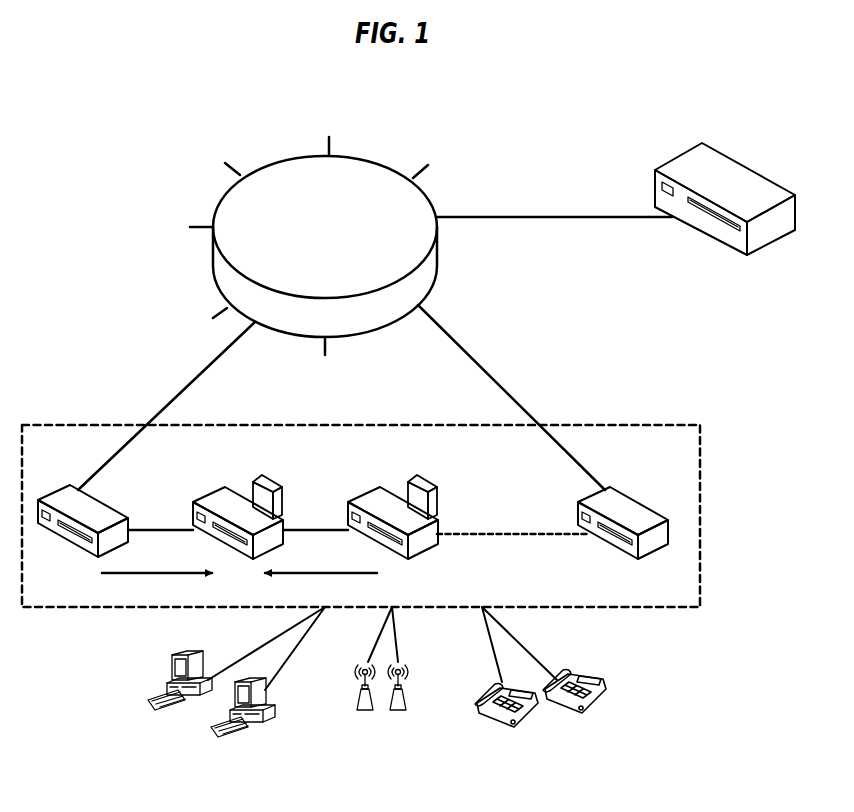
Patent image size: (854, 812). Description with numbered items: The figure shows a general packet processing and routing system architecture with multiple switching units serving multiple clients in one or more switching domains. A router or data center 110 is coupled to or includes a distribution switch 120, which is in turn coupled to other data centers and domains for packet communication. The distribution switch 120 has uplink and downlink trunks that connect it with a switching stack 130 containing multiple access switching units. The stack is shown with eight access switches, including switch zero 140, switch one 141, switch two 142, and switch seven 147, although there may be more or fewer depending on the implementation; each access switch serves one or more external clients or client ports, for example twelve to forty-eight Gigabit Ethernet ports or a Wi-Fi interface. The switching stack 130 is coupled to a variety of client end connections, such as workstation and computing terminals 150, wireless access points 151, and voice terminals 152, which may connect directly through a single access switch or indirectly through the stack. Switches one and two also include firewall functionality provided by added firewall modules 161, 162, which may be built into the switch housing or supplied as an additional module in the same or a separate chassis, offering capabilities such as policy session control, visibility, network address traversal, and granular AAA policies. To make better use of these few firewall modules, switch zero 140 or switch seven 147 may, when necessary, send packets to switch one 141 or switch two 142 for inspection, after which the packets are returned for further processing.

The router or data center 110 is at (677, 157).
The distribution switch 120 is at (370, 175).
The switching stack 130 is at (657, 425).
The access switch 140 is at (98, 517).
The access switch 141 is at (215, 498).
The access switch 142 is at (430, 530).
The access switch 147 is at (618, 500).
The computing terminals 150 is at (189, 748).
The wireless access points 151 is at (394, 726).
The voice terminals 152 is at (549, 720).
The firewall module 161 is at (270, 482).
The firewall module 162 is at (425, 483).